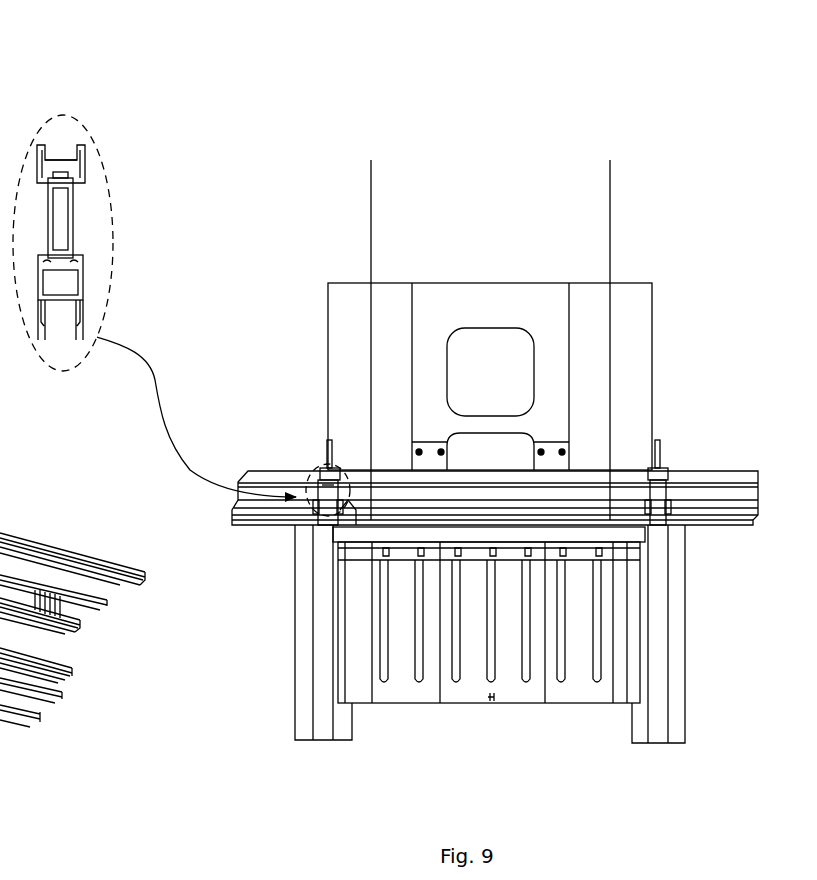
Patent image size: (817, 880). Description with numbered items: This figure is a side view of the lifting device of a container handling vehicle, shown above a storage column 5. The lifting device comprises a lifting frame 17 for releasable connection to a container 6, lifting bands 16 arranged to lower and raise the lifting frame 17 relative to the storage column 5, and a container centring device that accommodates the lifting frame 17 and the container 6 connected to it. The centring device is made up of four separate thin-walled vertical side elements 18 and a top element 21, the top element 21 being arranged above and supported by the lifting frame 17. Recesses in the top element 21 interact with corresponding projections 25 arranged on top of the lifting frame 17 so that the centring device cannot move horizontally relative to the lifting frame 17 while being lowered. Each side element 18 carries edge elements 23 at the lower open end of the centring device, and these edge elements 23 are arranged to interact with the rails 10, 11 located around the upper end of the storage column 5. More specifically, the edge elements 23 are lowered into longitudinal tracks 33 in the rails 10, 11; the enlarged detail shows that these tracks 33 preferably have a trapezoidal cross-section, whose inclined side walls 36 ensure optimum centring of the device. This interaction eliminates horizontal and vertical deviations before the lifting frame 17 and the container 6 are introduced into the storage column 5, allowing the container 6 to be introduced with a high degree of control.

The storage column 5 is at (460, 744).
The container 6 is at (530, 655).
The rail 10 is at (286, 472).
The rail 11 is at (0, 576).
The lifting band 16 is at (370, 222).
The lifting frame 17 is at (587, 532).
The vertical side element 18 is at (328, 342).
The top element 21 is at (465, 283).
The edge element 23 is at (550, 463).
The projection 25 is at (335, 522).
The longitudinal recess/track 33 is at (58, 148).
The inclined side wall 36 is at (75, 152).